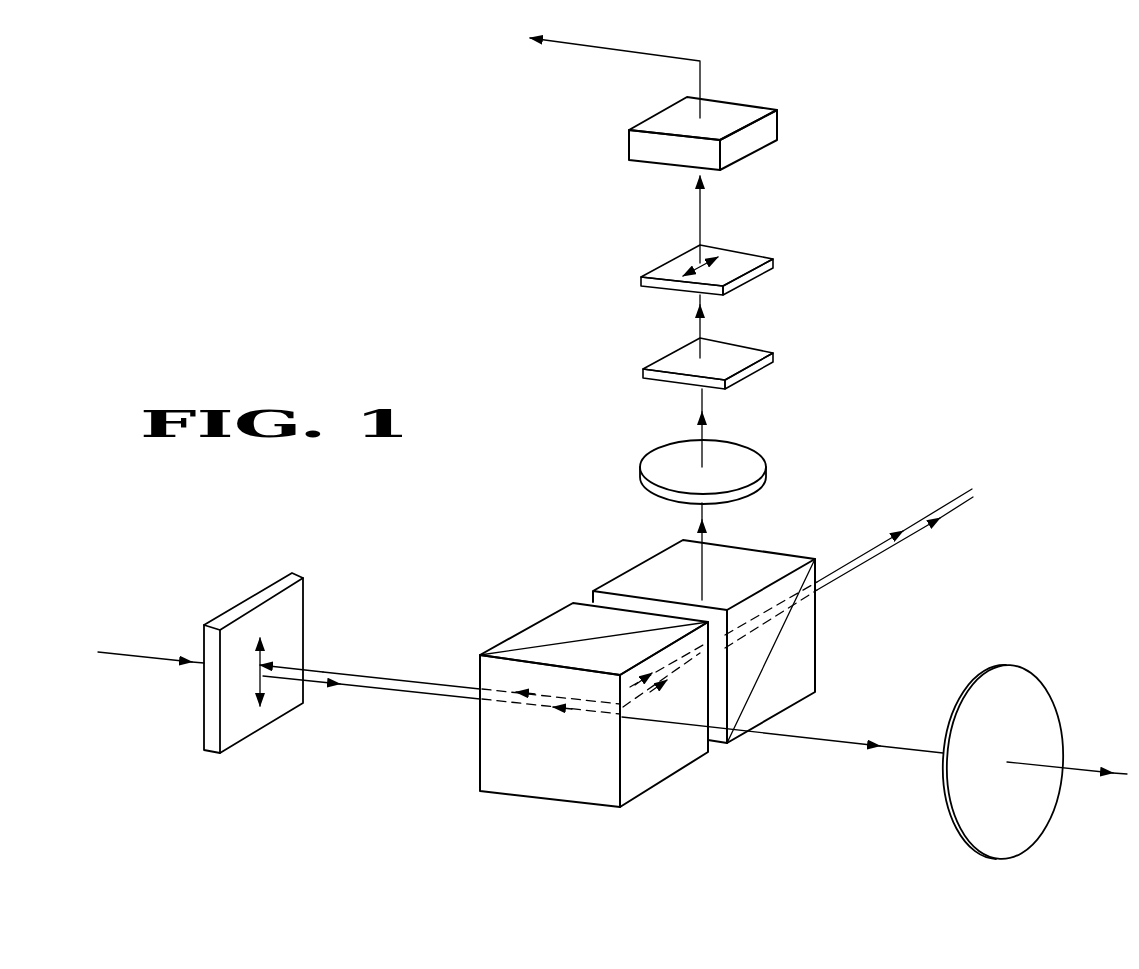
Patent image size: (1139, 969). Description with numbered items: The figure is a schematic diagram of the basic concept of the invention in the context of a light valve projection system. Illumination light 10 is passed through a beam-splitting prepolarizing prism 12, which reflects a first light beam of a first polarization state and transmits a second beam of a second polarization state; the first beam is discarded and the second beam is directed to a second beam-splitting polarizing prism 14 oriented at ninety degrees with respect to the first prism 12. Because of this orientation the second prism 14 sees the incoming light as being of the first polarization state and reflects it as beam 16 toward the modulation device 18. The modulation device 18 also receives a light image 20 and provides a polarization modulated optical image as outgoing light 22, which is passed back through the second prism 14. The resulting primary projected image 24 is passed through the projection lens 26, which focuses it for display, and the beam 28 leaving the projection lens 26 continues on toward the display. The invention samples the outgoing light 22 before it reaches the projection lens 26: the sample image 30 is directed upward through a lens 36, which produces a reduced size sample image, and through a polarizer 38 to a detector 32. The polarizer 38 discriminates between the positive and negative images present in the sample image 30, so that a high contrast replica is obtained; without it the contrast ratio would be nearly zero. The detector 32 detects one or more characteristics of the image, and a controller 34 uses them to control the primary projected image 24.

The illumination light 10 is at (972, 489).
The beam-splitting prepolarizing prism 12 is at (810, 660).
The second beam-splitting polarizing prism 14 is at (547, 792).
The beam 16 is at (363, 672).
The modulation device 18 is at (303, 595).
The light image 20 is at (137, 653).
The outgoing light 22 is at (398, 690).
The primary projected image 24 is at (787, 737).
The projection lens 26 is at (1033, 678).
The output beam 28 is at (1082, 767).
The sample image 30 is at (705, 535).
The detector 32 is at (757, 253).
The controller 34 is at (773, 128).
The lens 36 is at (743, 453).
The polarizer 38 is at (757, 348).